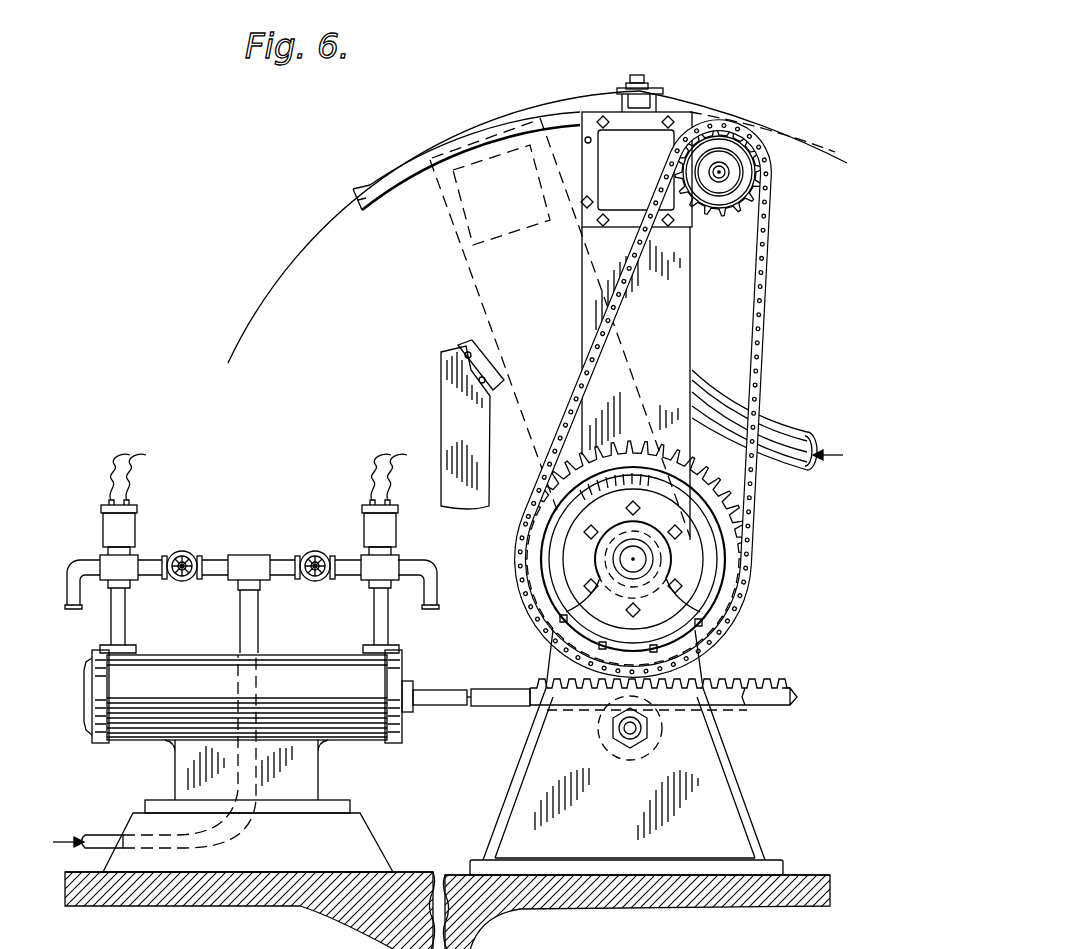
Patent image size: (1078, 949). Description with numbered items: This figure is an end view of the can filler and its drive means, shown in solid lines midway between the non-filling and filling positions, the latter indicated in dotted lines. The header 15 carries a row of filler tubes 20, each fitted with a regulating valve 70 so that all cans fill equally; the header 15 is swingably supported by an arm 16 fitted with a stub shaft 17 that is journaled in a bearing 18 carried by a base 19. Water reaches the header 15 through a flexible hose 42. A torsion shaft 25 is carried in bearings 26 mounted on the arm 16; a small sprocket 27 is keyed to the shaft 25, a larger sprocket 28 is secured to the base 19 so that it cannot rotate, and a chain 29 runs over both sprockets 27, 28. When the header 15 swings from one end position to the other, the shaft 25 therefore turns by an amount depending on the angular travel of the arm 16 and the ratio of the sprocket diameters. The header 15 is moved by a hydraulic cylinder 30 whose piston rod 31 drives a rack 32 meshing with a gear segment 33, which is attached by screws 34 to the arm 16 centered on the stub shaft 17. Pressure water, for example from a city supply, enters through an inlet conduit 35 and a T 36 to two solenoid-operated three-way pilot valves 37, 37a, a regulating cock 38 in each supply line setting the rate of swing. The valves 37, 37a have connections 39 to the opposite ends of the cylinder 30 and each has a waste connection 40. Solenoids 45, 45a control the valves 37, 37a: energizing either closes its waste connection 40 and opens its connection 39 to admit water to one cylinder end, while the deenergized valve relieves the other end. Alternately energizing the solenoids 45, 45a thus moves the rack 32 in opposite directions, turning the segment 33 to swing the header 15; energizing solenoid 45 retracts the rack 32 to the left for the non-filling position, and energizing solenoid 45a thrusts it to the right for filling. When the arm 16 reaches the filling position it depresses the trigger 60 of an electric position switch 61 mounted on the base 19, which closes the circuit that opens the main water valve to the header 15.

The header 15 is at (648, 137).
The arm 16 is at (476, 274).
The stub shaft 17 is at (630, 556).
The bearing 18 is at (560, 566).
The base 19 is at (528, 795).
The filler tubes 20 is at (368, 183).
The torsion shaft 25 is at (727, 174).
The bearings 26 is at (756, 203).
The small sprocket 27 is at (738, 152).
The larger sprocket 28 is at (700, 497).
The chain 29 is at (762, 302).
The hydraulic cylinder 30 is at (343, 726).
The piston rod 31 is at (480, 706).
The rack 32 is at (753, 706).
The gear segment 33 is at (732, 604).
The screws 34 is at (676, 581).
The inlet conduit 35 is at (250, 603).
The T 36 is at (243, 555).
The solenoid operated three-way pilot valve 37 is at (394, 559).
The solenoid operated three-way pilot valve 37a is at (133, 556).
The regulating cock 38 is at (185, 552).
The connections 39 is at (122, 608).
The waste connection 40 is at (80, 592).
The flexible hose 42 is at (775, 440).
The solenoid 45 is at (372, 532).
The solenoid 45a is at (115, 527).
The trigger 60 is at (505, 379).
The electric position switch 61 is at (466, 348).
The regulating valve 70 is at (637, 74).